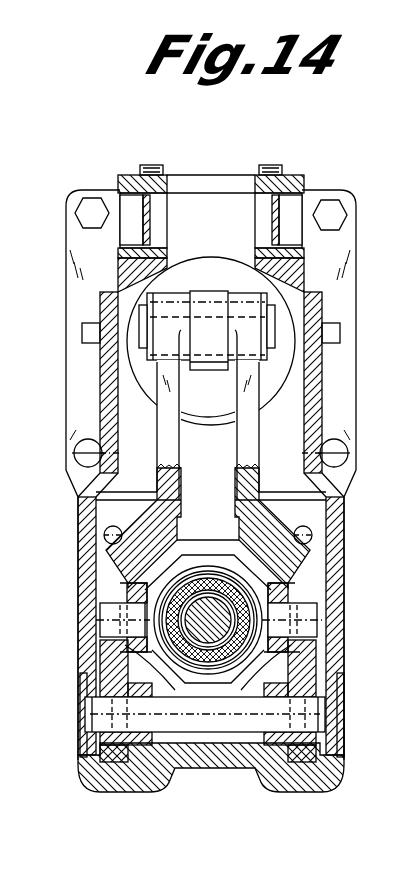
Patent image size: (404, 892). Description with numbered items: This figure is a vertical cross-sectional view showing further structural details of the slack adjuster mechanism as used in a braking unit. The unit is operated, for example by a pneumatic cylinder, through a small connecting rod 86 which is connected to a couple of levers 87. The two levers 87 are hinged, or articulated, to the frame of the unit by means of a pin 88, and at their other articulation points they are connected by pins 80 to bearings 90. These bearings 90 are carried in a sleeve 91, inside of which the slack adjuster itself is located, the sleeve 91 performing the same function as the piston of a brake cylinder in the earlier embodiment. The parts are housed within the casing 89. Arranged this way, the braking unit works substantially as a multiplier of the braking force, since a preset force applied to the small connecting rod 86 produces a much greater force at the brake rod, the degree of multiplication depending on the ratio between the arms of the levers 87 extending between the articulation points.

The pins 80 is at (106, 624).
The small connecting rod 86 is at (208, 310).
The levers 87 is at (244, 437).
The pin 88 is at (231, 720).
The casing 89 is at (120, 782).
The bearings 90 is at (134, 587).
The sleeve 91 is at (180, 677).